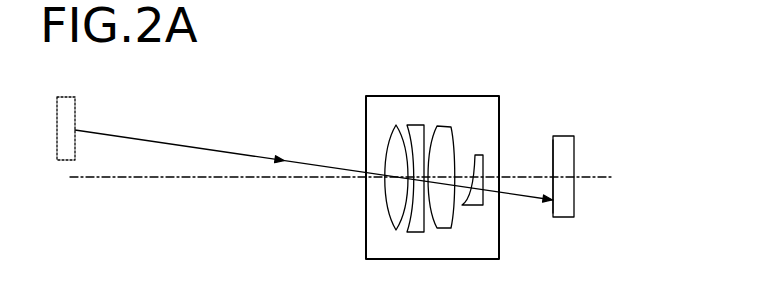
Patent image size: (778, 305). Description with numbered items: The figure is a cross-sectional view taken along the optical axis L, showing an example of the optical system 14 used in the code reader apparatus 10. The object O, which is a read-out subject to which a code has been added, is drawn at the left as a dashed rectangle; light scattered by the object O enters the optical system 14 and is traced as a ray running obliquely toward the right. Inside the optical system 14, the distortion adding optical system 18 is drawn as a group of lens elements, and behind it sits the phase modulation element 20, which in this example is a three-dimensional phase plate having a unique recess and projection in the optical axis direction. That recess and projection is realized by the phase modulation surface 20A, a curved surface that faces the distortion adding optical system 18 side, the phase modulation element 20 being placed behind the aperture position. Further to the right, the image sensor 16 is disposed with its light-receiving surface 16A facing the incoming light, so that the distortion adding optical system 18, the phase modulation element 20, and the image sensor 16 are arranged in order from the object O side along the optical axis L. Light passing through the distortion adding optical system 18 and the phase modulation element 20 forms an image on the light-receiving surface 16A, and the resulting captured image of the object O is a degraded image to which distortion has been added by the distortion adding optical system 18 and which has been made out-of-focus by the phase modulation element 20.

The code reader apparatus 10 is at (573, 63).
The optical system 14 is at (442, 96).
The image sensor 16 is at (562, 187).
The light-receiving surface 16A is at (553, 156).
The distortion adding optical system 18 is at (381, 119).
The phase modulation element 20 is at (478, 203).
The phase modulation surface 20A is at (470, 170).
The object O is at (75, 117).
The optical axis L is at (250, 179).